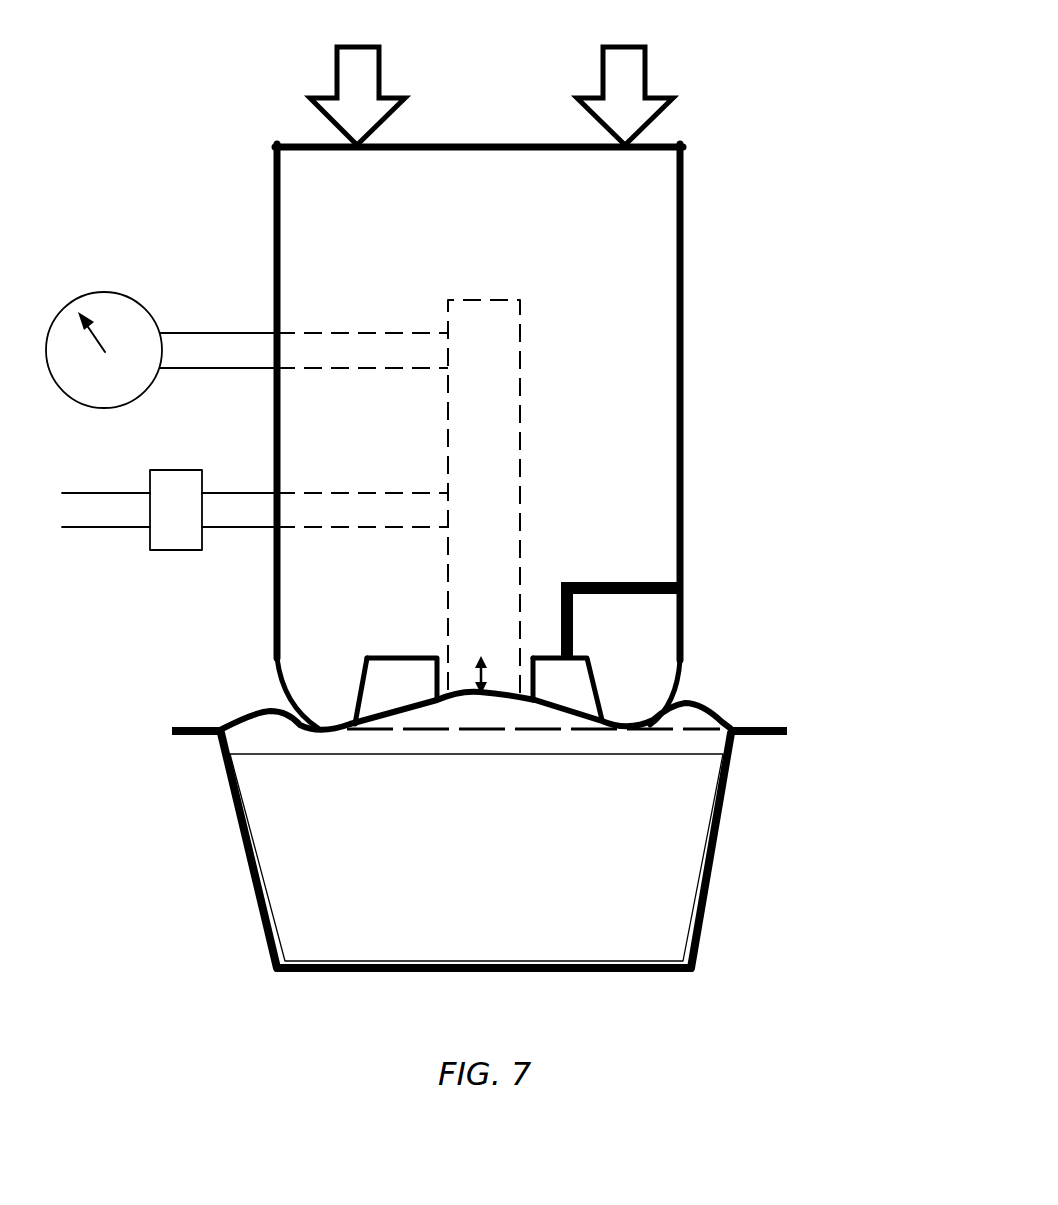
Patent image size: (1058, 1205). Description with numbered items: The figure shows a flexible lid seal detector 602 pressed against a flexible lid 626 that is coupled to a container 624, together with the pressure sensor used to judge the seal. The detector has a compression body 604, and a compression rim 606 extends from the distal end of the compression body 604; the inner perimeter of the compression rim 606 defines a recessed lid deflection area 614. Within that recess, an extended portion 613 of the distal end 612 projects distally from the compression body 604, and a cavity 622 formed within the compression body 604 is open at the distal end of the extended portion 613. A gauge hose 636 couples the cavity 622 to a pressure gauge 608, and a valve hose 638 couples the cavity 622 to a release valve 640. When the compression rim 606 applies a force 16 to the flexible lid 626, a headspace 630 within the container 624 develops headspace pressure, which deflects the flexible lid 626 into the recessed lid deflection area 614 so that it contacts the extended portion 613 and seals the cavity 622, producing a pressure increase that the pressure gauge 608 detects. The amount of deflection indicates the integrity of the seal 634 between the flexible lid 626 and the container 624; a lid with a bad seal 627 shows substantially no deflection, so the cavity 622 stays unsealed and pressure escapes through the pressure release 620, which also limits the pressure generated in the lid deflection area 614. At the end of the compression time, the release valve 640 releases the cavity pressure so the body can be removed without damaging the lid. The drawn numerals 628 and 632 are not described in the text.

The force 16 is at (360, 47).
The flexible lid seal detector 602 is at (695, 84).
The compression body 604 is at (683, 237).
The compression rim 606 is at (647, 673).
The pressure gauge 608 is at (113, 292).
The distal end 612 is at (382, 658).
The extended portion 613 is at (453, 707).
The recessed lid deflection area 614 is at (400, 688).
The pressure release 620 is at (662, 584).
The cavity 622 is at (475, 300).
The container 624 is at (727, 808).
The flexible lid 626 is at (686, 700).
The flexible lid comprising a bad seal 627 is at (437, 731).
The liquid 628 is at (297, 826).
The headspace 630 is at (270, 728).
The deflection gap 632 is at (478, 707).
The seal 634 is at (808, 710).
The gauge hose 636 is at (392, 370).
The valve hose 638 is at (315, 493).
The release valve 640 is at (177, 470).